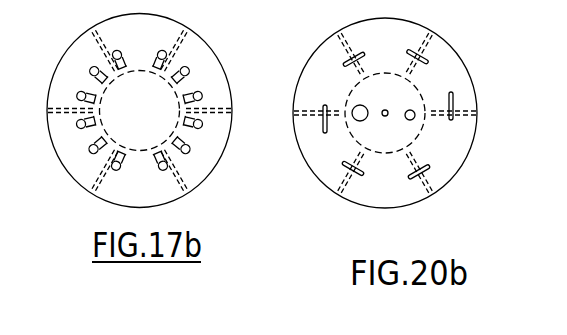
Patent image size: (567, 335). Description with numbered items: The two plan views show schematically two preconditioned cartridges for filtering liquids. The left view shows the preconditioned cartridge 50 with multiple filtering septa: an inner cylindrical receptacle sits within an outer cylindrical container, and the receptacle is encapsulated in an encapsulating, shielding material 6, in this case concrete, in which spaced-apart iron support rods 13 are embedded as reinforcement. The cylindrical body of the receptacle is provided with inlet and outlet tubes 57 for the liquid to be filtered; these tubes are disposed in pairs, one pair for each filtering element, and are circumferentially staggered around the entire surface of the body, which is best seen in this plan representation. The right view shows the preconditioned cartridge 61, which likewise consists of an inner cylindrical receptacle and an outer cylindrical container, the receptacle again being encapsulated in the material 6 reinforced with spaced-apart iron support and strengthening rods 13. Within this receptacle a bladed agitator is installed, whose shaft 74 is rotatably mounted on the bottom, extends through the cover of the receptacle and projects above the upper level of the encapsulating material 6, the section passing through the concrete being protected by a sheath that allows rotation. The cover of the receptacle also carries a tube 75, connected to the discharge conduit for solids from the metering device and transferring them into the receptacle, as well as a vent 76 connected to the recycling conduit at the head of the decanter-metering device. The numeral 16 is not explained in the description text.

In FIG. 17B, the encapsulating, shielding material 6 is at (70, 82).
In FIG. 20B, the encapsulating, shielding material 6 is at (317, 155).
In FIG. 17B, the iron support rods 13 is at (139, 96).
In FIG. 20B, the iron support rods 13 is at (320, 226).
In FIG. 20B, the locking pins 16 is at (412, 24).
In FIG. 17B, the preconditioned cartridge 50 is at (155, 111).
In FIG. 17B, the inlet and outlet tubes 57 is at (188, 66).
In FIG. 20B, the preconditioned cartridge 61 is at (395, 113).
In FIG. 20B, the shaft 74 is at (386, 117).
In FIG. 20B, the tube 75 is at (352, 108).
In FIG. 20B, the vent 76 is at (415, 119).